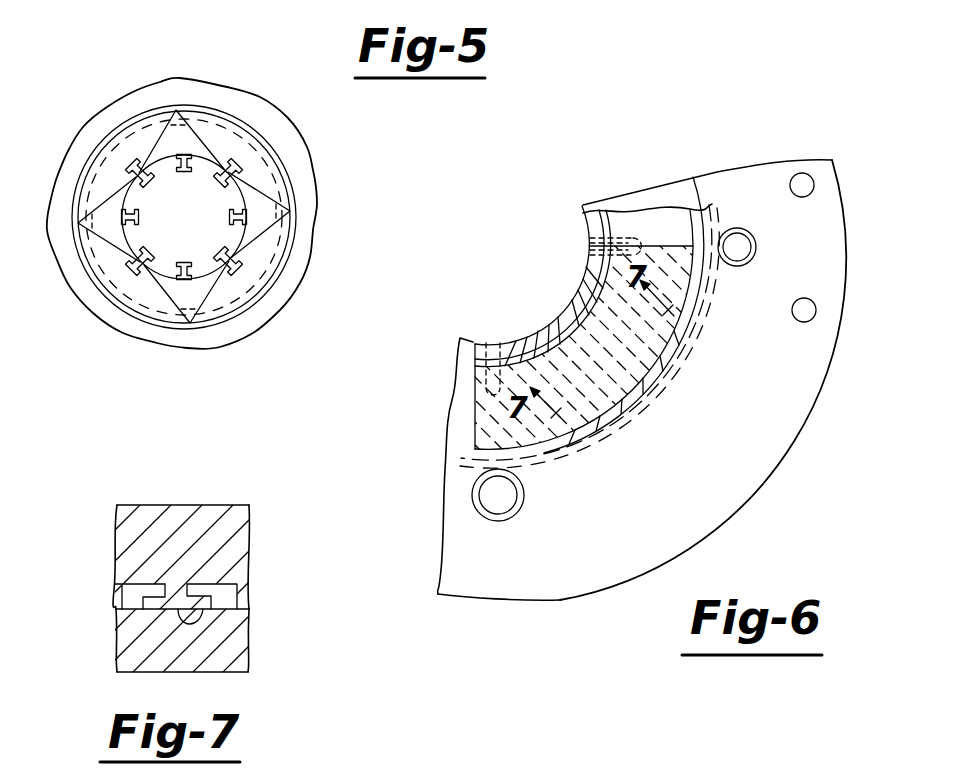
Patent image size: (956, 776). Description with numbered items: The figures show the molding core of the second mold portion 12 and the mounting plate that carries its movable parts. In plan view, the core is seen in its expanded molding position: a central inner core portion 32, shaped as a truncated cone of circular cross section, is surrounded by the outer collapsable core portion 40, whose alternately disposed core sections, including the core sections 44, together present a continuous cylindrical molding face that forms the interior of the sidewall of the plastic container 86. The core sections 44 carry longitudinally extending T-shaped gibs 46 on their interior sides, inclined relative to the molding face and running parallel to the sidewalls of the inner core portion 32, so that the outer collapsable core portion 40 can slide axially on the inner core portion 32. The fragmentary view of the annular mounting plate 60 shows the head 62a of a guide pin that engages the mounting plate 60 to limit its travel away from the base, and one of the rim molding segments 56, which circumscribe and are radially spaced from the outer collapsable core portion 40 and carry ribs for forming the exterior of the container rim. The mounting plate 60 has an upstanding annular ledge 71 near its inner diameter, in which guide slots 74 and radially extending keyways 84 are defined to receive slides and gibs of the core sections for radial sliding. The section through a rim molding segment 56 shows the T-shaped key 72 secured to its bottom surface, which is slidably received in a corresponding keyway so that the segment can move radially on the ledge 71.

In FIG. 6, the second mold portion 12 is at (637, 430).
In FIG. 5, the inner core portion 32 is at (206, 230).
In FIG. 5, the outer collapsable core portion 40 is at (262, 262).
In FIG. 5, the core section 44 is at (258, 205).
In FIG. 5, the T-shaped gib 46 is at (127, 187).
In FIG. 6, the rim molding segment 56 is at (545, 427).
In FIG. 7, the rim molding segment 56 is at (213, 517).
In FIG. 6, the mounting plate 60 is at (770, 373).
In FIG. 6, the head 62a is at (742, 247).
In FIG. 7, the ledge 71 is at (225, 652).
In FIG. 7, the T-shaped key 72 is at (190, 626).
In FIG. 7, the guide slot 74 is at (133, 597).
In FIG. 6, the keyway 84 is at (490, 345).
In FIG. 5, the container 86 is at (263, 140).